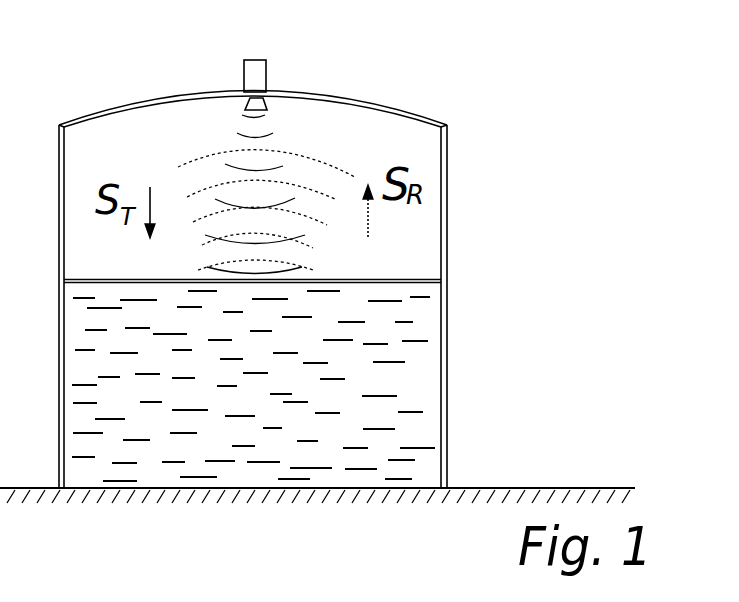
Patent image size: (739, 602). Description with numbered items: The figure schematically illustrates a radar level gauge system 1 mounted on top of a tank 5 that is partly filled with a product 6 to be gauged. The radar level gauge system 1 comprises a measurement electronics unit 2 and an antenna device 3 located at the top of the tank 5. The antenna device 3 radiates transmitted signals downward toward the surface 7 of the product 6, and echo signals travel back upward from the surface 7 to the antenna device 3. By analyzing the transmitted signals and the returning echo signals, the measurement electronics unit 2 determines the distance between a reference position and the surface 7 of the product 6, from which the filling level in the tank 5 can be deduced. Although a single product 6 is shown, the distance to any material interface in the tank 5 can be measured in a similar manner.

The radar level gauge system 1 is at (209, 59).
The measurement electronics unit 2 is at (243, 72).
The antenna device 3 is at (247, 108).
The tank 5 is at (447, 162).
The product 6 is at (420, 383).
The surface 7 is at (410, 277).